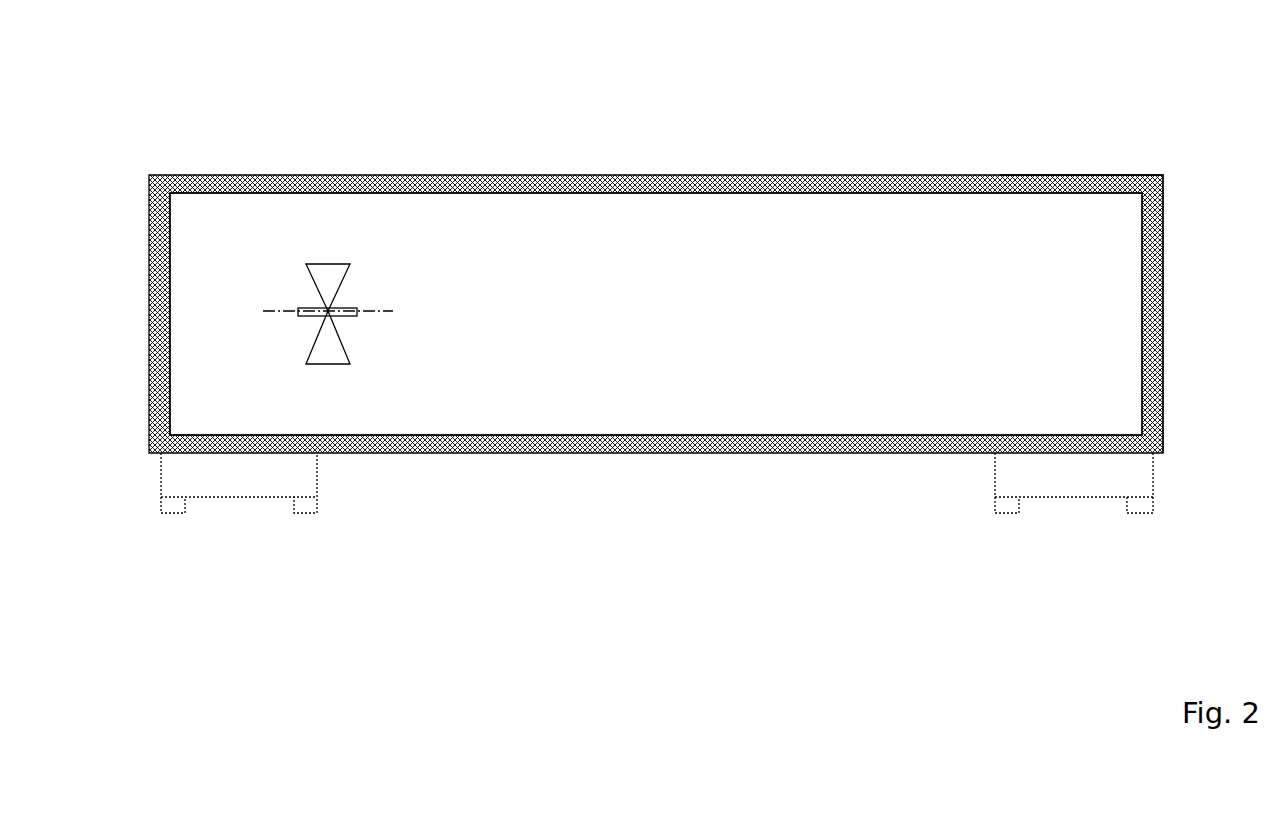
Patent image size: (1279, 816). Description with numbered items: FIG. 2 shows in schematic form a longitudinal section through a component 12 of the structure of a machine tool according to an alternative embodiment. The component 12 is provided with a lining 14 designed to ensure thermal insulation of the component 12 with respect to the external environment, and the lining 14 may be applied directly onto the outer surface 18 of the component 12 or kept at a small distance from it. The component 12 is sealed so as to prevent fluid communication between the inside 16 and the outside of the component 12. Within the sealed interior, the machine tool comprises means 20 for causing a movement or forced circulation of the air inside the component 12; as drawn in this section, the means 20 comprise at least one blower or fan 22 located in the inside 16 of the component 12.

The component 12 is at (656, 255).
The lining 14 is at (873, 176).
The inside 16 is at (874, 333).
The outer surface 18 is at (1009, 188).
The means for causing a movement or forced circulation of the air 20 is at (330, 201).
The blower or fan 22 is at (346, 279).